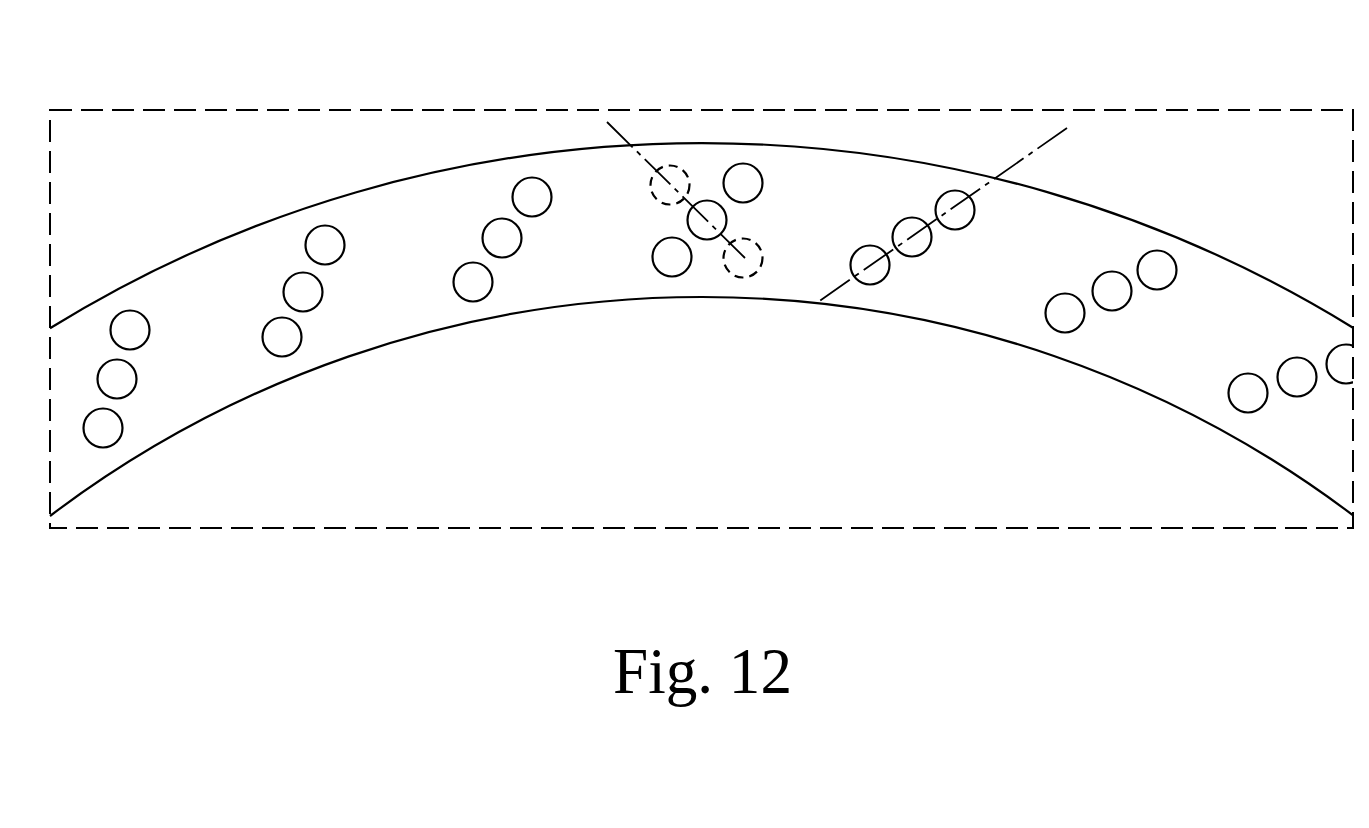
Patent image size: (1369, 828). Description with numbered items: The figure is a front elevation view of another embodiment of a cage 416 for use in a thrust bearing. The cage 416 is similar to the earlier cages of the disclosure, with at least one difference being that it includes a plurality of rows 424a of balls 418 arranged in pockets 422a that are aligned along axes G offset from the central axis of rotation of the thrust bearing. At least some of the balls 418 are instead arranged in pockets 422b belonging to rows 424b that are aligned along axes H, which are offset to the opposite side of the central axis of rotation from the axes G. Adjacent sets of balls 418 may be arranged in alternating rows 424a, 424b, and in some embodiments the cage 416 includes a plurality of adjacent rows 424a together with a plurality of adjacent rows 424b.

The cage 416 is at (1142, 202).
The balls 418 is at (720, 215).
The pockets 422a is at (657, 246).
The pockets 422b is at (762, 259).
The rows 424a is at (662, 278).
The rows 424b is at (748, 277).
The axes H is at (616, 130).
The axes G is at (1025, 153).